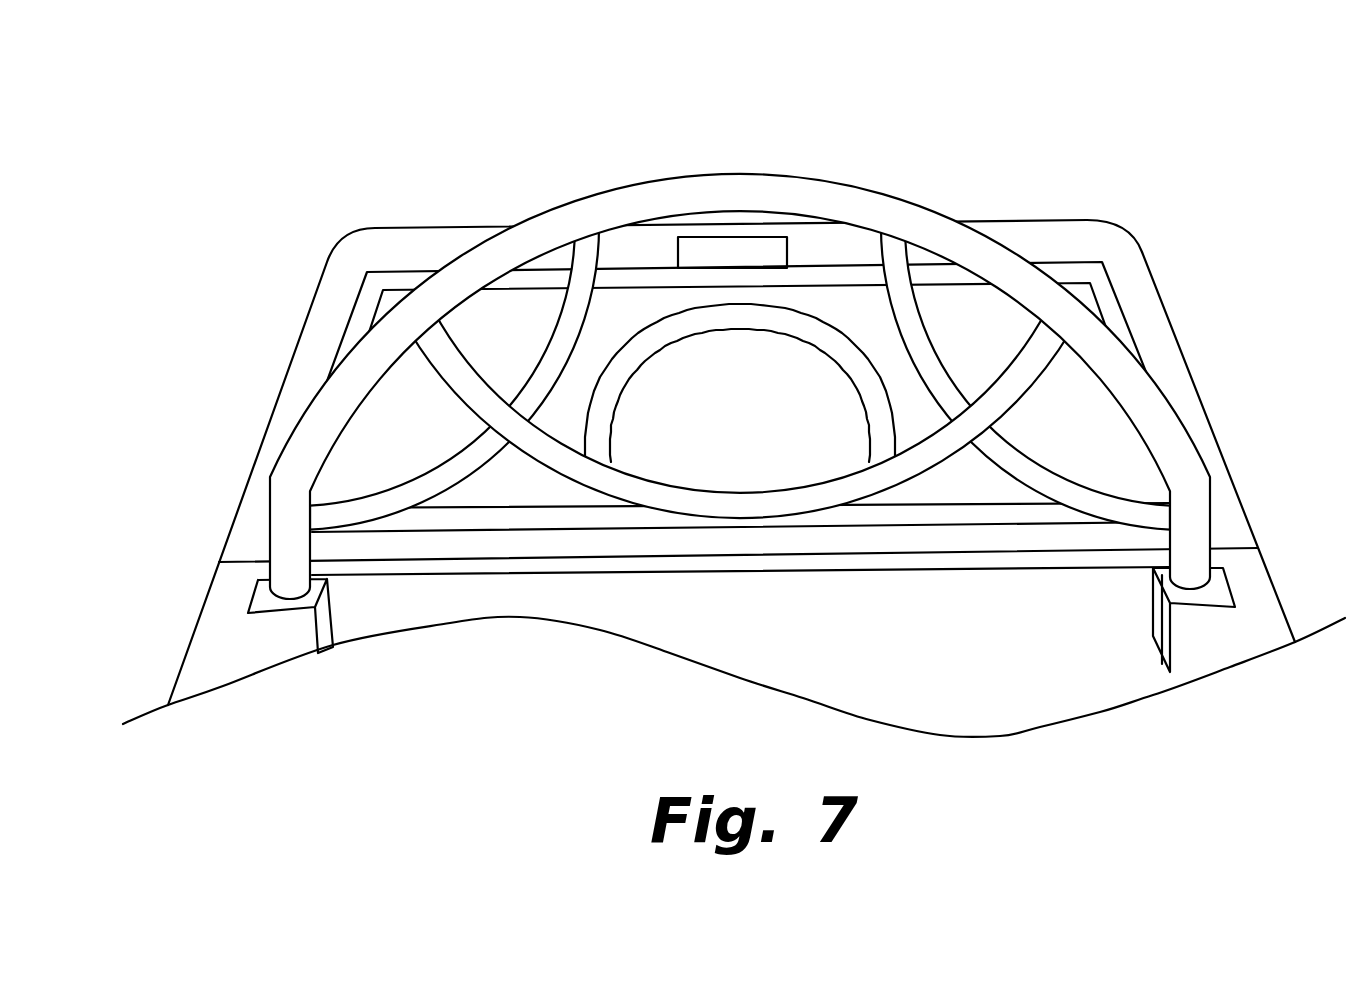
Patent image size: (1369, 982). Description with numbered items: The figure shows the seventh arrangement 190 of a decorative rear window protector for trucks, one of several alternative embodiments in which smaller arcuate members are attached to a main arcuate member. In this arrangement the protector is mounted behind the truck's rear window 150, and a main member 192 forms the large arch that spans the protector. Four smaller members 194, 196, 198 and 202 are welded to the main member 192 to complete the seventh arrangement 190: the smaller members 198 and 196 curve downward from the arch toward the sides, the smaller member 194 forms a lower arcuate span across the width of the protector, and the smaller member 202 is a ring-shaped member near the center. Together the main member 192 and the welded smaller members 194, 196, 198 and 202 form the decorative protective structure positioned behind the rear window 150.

The rear window 150 is at (1113, 297).
The seventh arrangement 190 is at (725, 342).
The main member 192 is at (835, 210).
The smaller member 194 is at (847, 488).
The smaller member 196 is at (1060, 483).
The smaller member 198 is at (413, 478).
The smaller member 202 is at (677, 325).